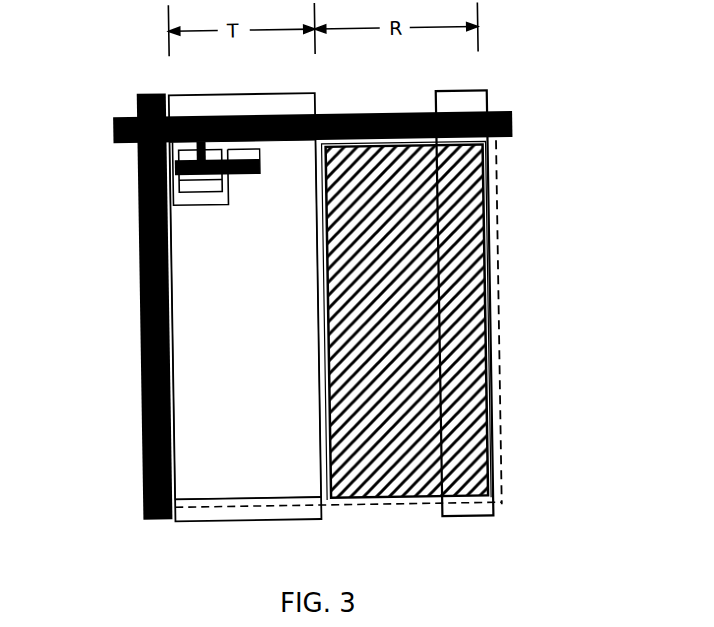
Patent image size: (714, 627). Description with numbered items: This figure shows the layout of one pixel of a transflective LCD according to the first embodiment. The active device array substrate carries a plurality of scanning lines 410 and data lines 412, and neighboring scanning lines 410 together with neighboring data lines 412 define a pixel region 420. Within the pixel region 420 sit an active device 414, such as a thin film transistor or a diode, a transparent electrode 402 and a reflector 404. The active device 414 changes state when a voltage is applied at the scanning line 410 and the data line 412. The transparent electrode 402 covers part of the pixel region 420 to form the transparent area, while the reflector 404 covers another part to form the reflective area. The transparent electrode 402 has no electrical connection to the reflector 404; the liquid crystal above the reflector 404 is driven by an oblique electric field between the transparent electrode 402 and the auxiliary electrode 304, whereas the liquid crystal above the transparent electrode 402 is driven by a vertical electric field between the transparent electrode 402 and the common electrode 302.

The common electrode 302 is at (215, 513).
The auxiliary electrode 304 is at (497, 505).
The transparent electrode 402 is at (282, 452).
The reflector 404 is at (403, 452).
The scanning line 410 is at (512, 125).
The data line 412 is at (143, 388).
The active device 414 is at (141, 251).
The pixel region 420 is at (497, 232).